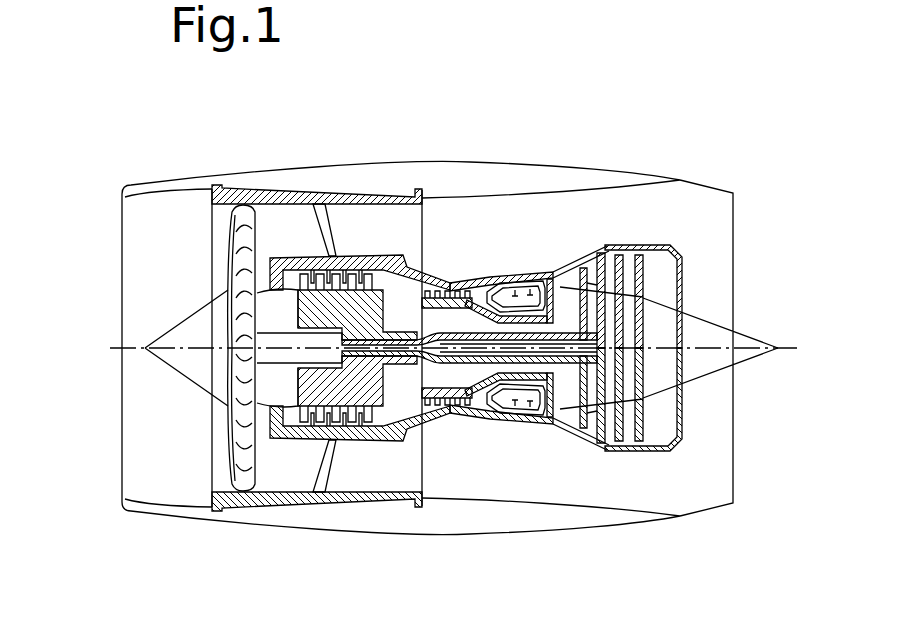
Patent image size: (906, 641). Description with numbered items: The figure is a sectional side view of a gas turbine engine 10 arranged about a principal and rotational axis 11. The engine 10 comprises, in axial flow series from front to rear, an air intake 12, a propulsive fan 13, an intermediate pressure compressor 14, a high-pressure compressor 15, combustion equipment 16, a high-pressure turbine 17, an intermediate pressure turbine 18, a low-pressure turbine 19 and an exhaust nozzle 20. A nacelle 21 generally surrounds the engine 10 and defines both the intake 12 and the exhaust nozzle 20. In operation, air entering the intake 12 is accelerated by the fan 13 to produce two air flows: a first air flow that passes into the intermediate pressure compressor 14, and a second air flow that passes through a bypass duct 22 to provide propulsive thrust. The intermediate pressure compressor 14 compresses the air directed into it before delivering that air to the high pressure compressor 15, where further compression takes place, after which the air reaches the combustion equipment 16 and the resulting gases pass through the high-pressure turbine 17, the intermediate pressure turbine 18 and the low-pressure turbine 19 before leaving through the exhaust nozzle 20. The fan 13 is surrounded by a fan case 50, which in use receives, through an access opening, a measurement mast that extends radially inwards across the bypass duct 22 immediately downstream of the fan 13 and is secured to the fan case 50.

The gas turbine engine 10 is at (112, 200).
The principal and rotational axis 11 is at (117, 347).
The air intake 12 is at (185, 195).
The propulsive fan 13 is at (232, 470).
The intermediate pressure compressor 14 is at (343, 430).
The high-pressure compressor 15 is at (452, 292).
The combustion equipment 16 is at (500, 408).
The high-pressure turbine 17 is at (552, 427).
The intermediate pressure turbine 18 is at (585, 272).
The low-pressure turbine 19 is at (597, 447).
The exhaust nozzle 20 is at (733, 465).
The nacelle 21 is at (470, 168).
The bypass duct 22 is at (406, 241).
The fan case 50 is at (306, 195).